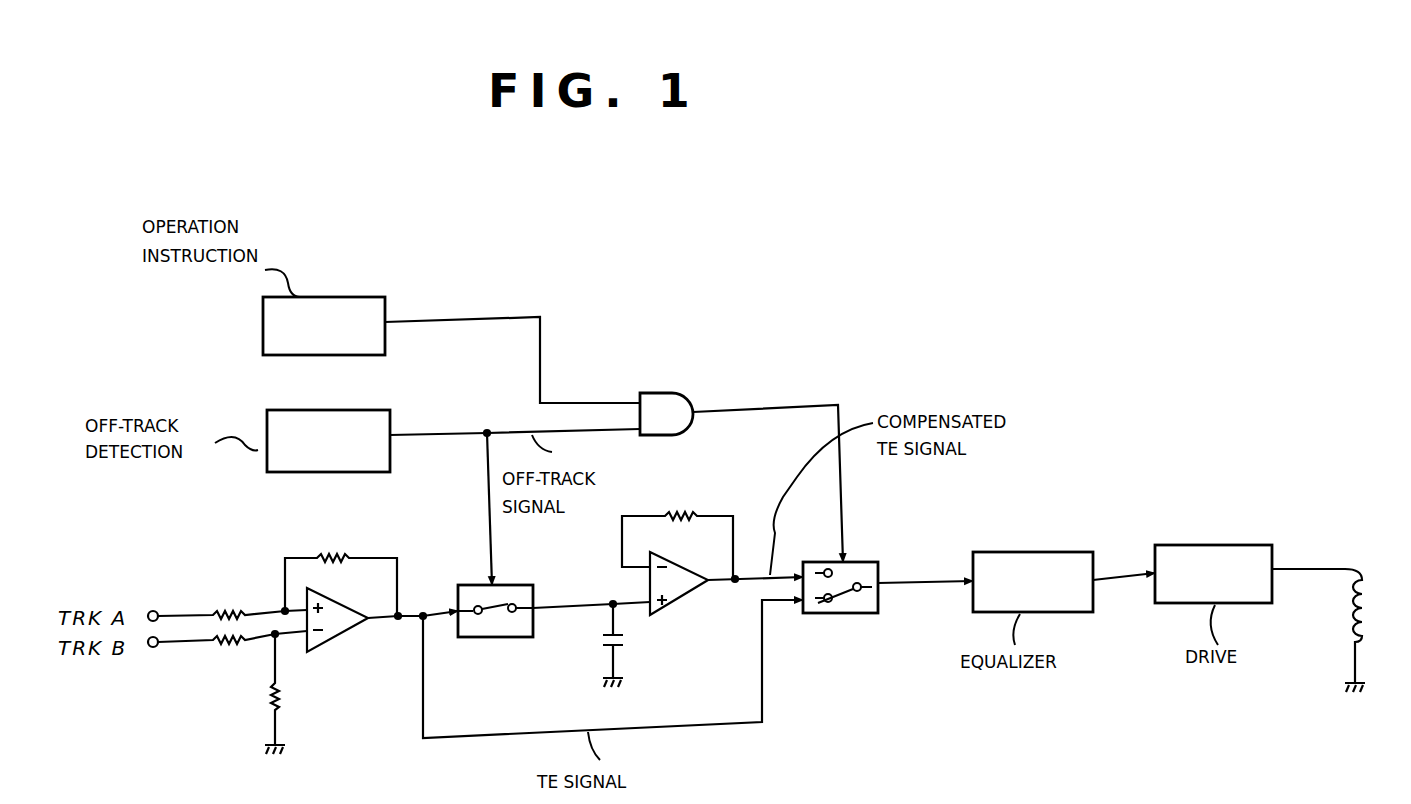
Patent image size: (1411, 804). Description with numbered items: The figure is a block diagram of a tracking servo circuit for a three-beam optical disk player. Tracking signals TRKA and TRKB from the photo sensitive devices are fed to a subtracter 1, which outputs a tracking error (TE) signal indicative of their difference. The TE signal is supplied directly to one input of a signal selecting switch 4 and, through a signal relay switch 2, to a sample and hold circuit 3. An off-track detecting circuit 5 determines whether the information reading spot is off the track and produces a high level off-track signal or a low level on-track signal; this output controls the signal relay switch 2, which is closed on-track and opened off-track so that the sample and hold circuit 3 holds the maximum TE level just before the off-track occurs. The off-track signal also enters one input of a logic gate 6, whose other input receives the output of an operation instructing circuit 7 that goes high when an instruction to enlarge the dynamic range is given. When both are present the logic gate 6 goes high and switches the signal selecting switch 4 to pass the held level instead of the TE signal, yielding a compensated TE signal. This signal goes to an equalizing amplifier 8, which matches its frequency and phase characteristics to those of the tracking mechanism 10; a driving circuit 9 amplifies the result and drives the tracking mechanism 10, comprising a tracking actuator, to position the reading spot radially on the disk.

The subtracter 1 is at (338, 647).
The signal relay switch 2 is at (535, 588).
The sample and hold circuit 3 is at (685, 610).
The signal selecting switch 4 is at (882, 565).
The off-track detecting circuit 5 is at (390, 413).
The logic gate 6 is at (678, 393).
The operation instructing circuit 7 is at (385, 302).
The equalizing amplifier 8 is at (1038, 552).
The driving circuit 9 is at (1197, 545).
The tracking mechanism 10 is at (1362, 585).